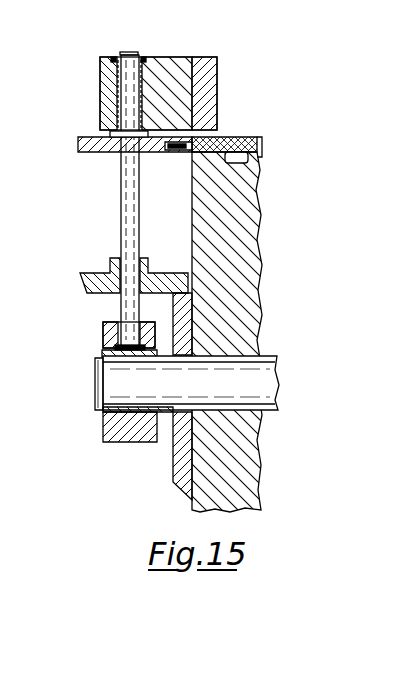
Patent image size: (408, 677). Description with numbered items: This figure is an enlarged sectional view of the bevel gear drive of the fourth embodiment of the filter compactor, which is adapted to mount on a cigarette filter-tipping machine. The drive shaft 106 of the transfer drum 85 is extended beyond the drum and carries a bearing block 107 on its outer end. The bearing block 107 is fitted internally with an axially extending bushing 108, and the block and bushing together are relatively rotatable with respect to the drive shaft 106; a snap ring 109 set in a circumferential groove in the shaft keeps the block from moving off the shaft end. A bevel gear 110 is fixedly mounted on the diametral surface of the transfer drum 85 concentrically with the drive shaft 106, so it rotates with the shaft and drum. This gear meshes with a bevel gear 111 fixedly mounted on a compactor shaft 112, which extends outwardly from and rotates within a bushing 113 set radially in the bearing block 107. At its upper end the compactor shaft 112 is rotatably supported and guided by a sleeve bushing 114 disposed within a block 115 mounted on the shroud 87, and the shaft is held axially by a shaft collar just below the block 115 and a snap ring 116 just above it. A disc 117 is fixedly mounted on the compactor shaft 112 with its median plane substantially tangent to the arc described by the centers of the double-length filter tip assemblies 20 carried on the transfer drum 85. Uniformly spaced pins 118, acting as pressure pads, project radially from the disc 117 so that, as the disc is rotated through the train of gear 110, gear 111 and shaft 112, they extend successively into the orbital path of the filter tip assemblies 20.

The double-length filter tip assembly 20 is at (233, 140).
The transfer drum 85 is at (258, 500).
The shroud 87 is at (215, 68).
The drive shaft 106 is at (108, 380).
The bearing block 107 is at (110, 435).
The bushing 108 is at (110, 362).
The snap ring 109 is at (103, 414).
The bevel gear 110 is at (173, 466).
The bevel gear 111 is at (85, 278).
The compactor shaft 112 is at (124, 182).
The bushing 113 is at (118, 323).
The sleeve bushing 114 is at (114, 60).
The block 115 is at (177, 60).
The snap ring 116 is at (143, 57).
The disc 117 is at (80, 139).
The pins 118 is at (188, 152).